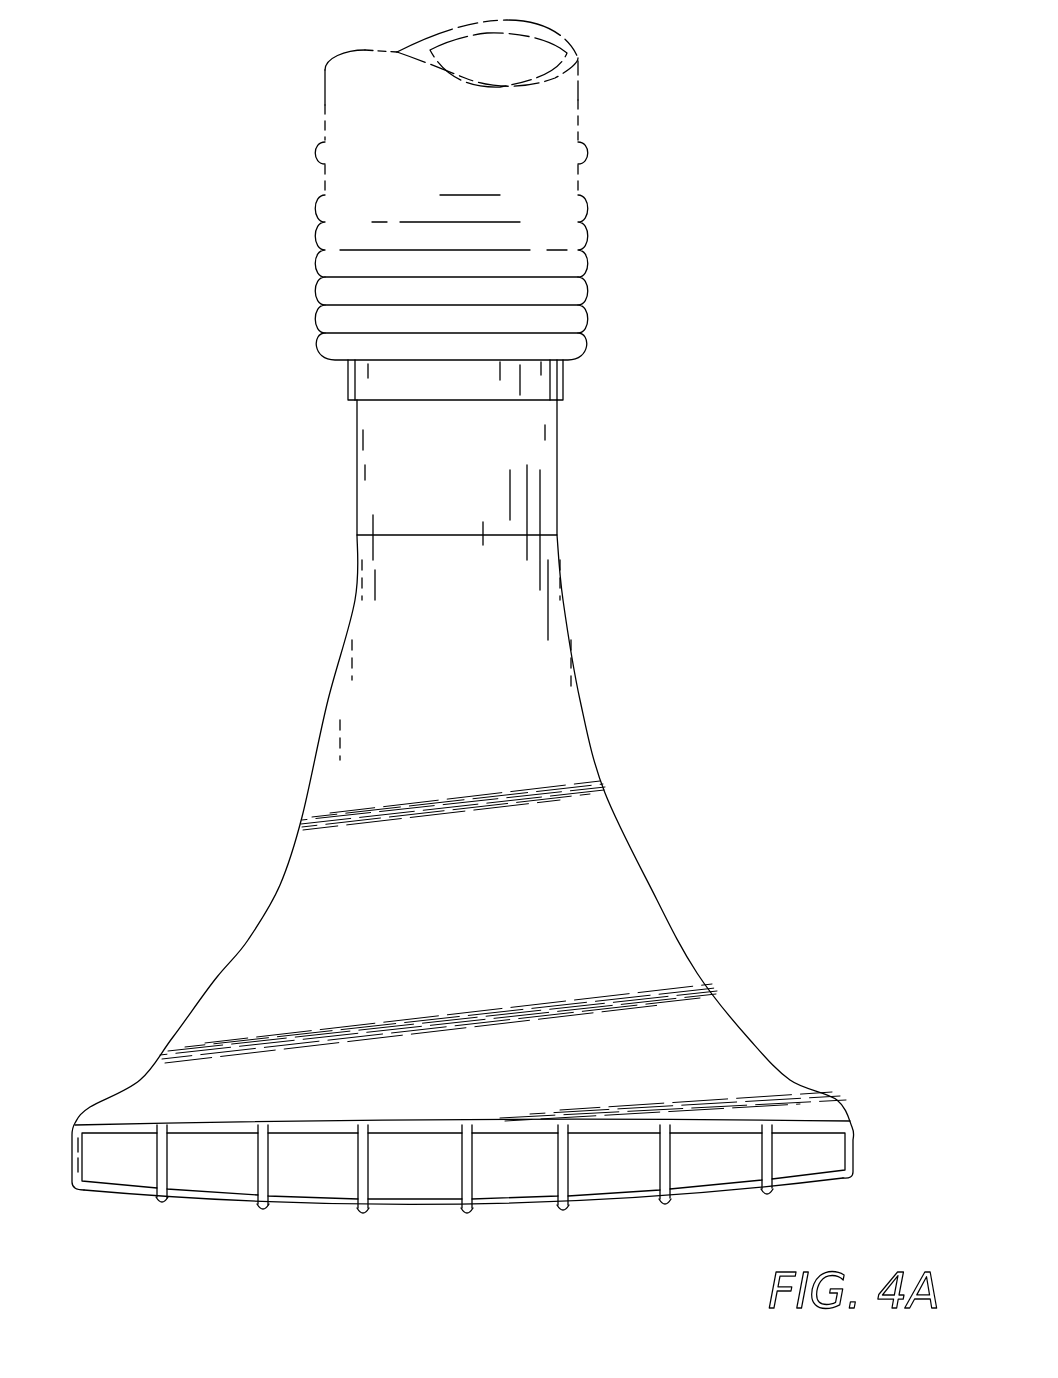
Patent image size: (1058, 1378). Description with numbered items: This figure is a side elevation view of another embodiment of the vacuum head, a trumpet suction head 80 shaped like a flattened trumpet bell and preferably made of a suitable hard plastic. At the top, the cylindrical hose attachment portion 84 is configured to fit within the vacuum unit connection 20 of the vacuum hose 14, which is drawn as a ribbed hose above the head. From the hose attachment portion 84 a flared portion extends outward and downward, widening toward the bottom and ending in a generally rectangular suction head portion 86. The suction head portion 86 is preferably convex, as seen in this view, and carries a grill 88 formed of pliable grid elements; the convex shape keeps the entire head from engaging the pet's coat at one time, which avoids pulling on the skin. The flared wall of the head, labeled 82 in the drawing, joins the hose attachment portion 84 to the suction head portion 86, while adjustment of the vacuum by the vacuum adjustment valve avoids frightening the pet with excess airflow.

The vacuum hose 14 is at (421, 148).
The vacuum unit connection 20 is at (348, 383).
The trumpet suction head 80 is at (620, 695).
The flared wall 82 is at (283, 880).
The cylindrical hose attachment portion 84 is at (381, 487).
The suction head portion 86 is at (155, 1124).
The grill 88 is at (241, 1203).